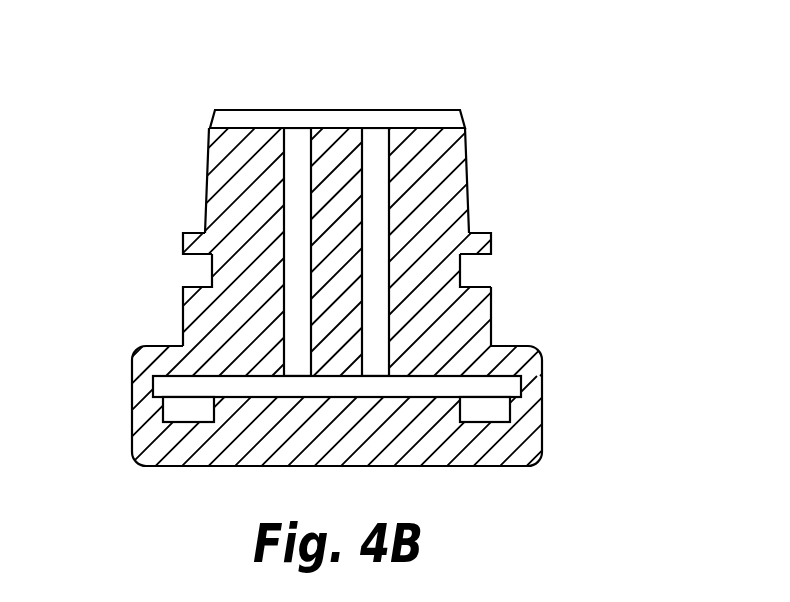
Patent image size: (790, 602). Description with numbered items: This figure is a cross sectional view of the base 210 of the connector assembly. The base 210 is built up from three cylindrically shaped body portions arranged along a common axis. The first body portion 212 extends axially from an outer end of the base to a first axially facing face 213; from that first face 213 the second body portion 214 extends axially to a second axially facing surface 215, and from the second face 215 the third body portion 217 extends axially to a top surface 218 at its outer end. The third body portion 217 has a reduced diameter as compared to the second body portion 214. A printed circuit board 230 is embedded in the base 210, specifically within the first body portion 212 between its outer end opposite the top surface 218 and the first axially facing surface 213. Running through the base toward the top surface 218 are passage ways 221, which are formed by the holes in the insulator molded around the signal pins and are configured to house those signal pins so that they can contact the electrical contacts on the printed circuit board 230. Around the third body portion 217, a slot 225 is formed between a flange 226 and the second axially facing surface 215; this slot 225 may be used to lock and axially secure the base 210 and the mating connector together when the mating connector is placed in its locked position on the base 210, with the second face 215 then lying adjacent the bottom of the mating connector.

The base 210 is at (522, 79).
The first body portion 212 is at (542, 428).
The first axially facing face 213 is at (163, 345).
The second body portion 214 is at (493, 302).
The second axially facing surface 215 is at (473, 287).
The third body portion 217 is at (222, 185).
The top surface 218 is at (238, 110).
The passage ways 221 is at (380, 179).
The slot 225 is at (210, 268).
The flange 226 is at (493, 243).
The printed circuit board 230 is at (515, 390).